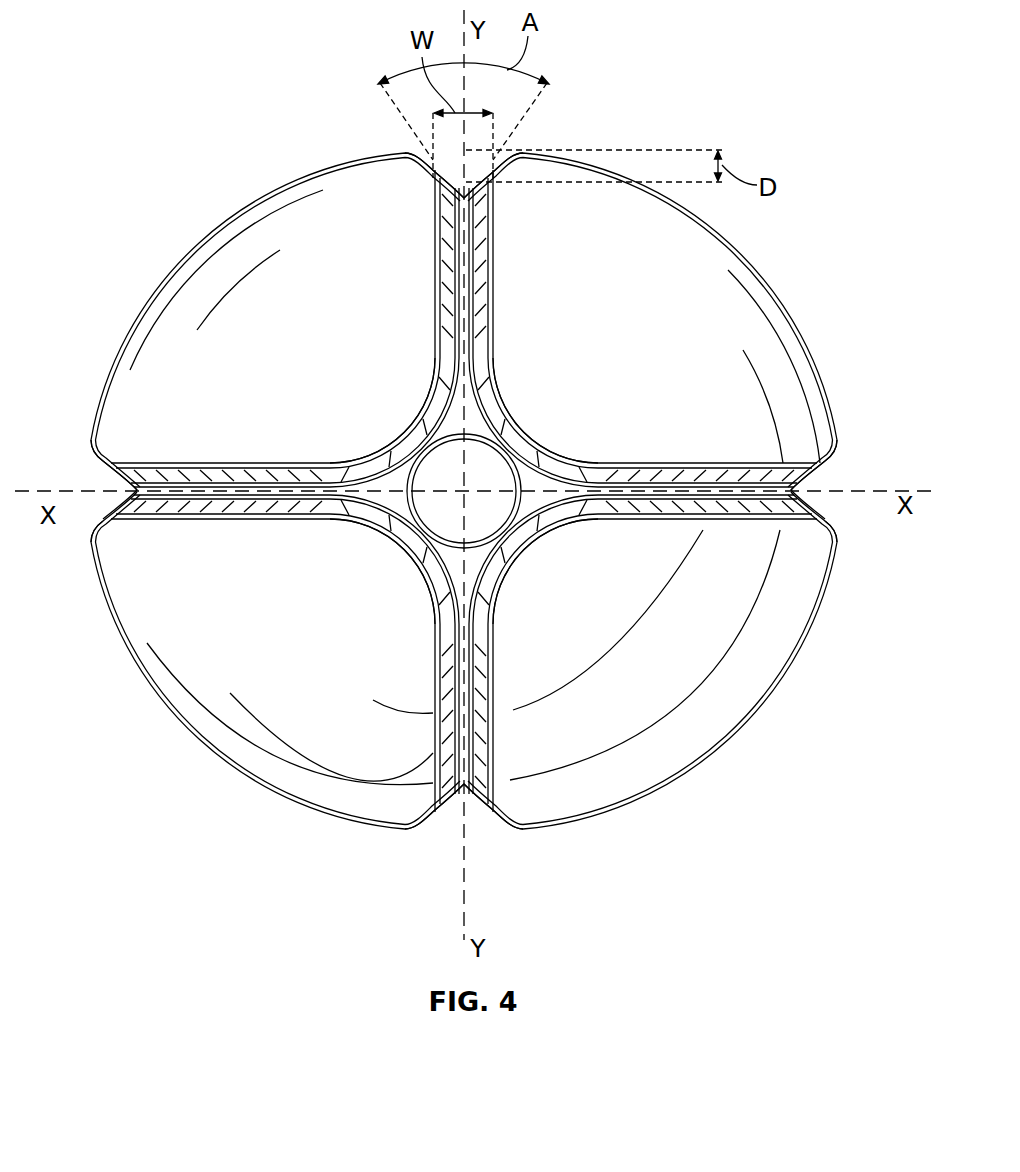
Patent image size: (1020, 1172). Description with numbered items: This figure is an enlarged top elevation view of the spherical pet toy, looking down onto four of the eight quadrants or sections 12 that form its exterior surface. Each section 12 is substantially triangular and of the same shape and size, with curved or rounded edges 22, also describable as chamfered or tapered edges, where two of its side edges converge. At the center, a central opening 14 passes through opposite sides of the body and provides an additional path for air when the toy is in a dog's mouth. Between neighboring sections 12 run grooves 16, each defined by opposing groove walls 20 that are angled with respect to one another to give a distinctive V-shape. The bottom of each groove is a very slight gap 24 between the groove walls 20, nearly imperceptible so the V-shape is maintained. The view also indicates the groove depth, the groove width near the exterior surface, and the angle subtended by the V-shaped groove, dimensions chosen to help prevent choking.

The section 12 is at (278, 349).
The central opening 14 is at (455, 530).
The groove 16 is at (428, 175).
The groove wall 20 is at (447, 242).
The curved or rounded edge 22 is at (412, 148).
The gap 24 is at (467, 310).